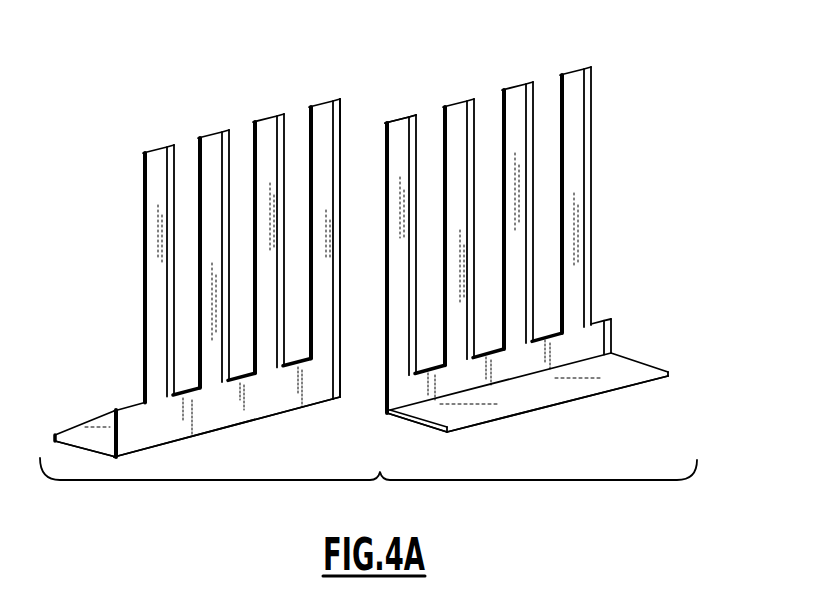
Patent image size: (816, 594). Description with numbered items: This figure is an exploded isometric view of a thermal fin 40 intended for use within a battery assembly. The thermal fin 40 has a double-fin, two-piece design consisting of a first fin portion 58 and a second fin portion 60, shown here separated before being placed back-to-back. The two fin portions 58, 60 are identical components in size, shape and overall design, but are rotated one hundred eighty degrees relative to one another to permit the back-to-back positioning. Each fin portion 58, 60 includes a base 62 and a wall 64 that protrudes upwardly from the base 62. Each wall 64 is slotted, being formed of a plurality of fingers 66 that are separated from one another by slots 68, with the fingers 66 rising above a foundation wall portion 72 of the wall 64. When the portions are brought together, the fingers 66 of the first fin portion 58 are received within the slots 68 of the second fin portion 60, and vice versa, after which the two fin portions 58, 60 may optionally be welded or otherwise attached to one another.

The thermal fin 40 is at (368, 488).
The first fin portion 58 is at (224, 83).
The second fin portion 60 is at (477, 64).
The base 62 is at (87, 416).
The wall 64 is at (284, 401).
The fingers 66 is at (158, 163).
The slots 68 is at (199, 256).
The foundation wall portion 72 is at (200, 410).